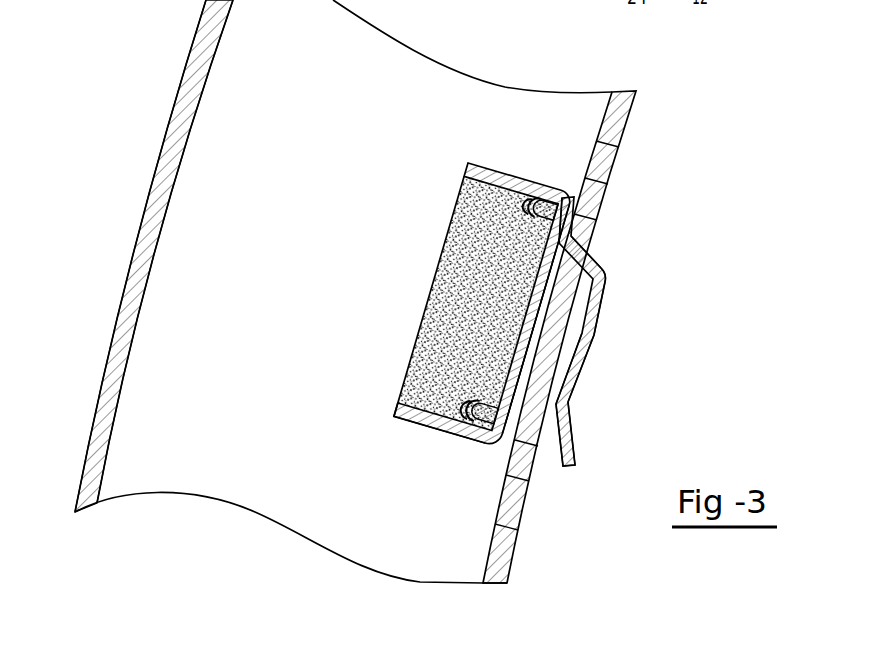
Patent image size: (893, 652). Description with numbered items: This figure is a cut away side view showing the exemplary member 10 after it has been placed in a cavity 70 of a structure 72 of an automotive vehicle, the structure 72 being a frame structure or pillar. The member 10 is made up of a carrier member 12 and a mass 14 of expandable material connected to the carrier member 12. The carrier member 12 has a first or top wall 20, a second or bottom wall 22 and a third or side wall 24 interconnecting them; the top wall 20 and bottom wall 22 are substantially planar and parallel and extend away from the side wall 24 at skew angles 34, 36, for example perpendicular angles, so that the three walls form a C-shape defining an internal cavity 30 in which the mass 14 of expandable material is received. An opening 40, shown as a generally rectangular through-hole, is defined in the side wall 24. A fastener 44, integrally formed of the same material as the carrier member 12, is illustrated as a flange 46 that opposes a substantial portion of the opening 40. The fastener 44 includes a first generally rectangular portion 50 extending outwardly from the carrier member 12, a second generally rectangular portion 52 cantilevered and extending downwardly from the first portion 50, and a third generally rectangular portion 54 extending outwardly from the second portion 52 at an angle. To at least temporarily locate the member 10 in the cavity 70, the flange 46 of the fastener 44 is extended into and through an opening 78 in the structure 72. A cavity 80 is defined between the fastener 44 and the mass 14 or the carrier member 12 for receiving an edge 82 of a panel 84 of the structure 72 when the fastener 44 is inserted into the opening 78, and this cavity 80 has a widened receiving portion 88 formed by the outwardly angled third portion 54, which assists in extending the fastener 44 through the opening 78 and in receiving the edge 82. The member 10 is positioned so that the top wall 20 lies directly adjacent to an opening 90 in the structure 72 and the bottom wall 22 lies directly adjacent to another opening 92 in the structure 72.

The member 10 is at (314, 344).
The carrier member 12 is at (406, 420).
The mass of expandable material 14 is at (452, 220).
The first or top wall 20 is at (497, 168).
The second or bottom wall 22 is at (398, 411).
The third or side wall 24 is at (571, 213).
The cavity 30 is at (455, 314).
The skew angle 34 is at (536, 198).
The skew angle 36 is at (466, 414).
The opening 40 is at (550, 330).
The fastener 44 is at (640, 279).
The flange 46 is at (572, 373).
The first generally rectangular portion 50 is at (608, 266).
The second generally rectangular portion 52 is at (565, 398).
The third generally rectangular portion 54 is at (577, 452).
The cavity 70 is at (266, 189).
The structure 72 is at (623, 116).
The opening 78 is at (590, 238).
The cavity 80 is at (590, 308).
The edge 82 is at (605, 284).
The panel 84 is at (505, 557).
The widened receiving portion 88 is at (545, 466).
The opening 90 is at (601, 160).
The opening 92 is at (509, 508).